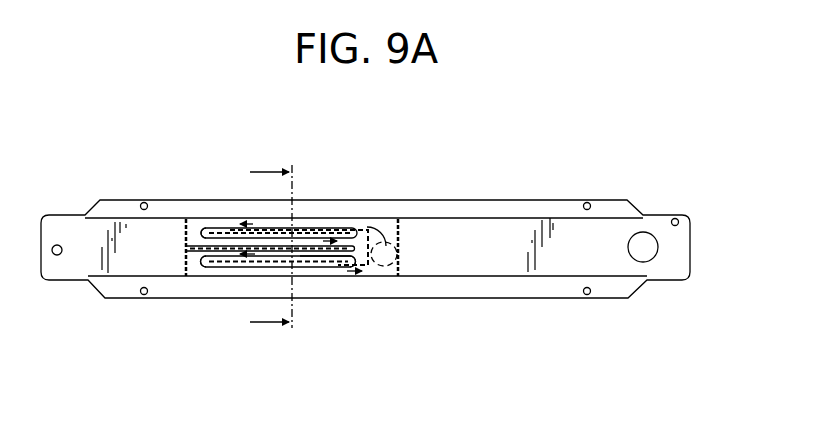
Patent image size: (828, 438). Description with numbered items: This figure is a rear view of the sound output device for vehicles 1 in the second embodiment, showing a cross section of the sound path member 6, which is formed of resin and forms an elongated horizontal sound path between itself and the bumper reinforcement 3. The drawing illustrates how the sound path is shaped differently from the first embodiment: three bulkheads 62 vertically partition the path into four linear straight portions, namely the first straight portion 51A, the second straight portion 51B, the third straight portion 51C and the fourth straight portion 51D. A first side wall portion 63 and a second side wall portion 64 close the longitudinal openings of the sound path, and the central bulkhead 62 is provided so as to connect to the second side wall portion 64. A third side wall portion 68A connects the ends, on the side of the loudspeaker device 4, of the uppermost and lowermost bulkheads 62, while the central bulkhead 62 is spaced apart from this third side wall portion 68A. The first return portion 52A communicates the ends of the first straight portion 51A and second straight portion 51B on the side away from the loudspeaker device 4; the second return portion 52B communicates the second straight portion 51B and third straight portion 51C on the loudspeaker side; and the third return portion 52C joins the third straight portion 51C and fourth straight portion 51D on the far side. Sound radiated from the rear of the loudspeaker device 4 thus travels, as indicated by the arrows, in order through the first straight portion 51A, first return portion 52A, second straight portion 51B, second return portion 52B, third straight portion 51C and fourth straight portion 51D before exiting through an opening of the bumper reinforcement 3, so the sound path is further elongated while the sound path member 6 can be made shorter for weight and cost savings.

The sound output device for vehicles 1 is at (679, 156).
The bumper reinforcement 3 is at (630, 202).
The loudspeaker device 4 is at (402, 263).
The sound path member 6 is at (404, 236).
The first straight portion 51A is at (338, 227).
The second straight portion 51B is at (314, 260).
The third straight portion 51C is at (263, 252).
The fourth straight portion 51D is at (224, 268).
The first return portion 52A is at (194, 233).
The second return portion 52B is at (361, 268).
The third return portion 52C is at (198, 262).
The bulkhead 62 is at (232, 233).
The first side wall portion 63 is at (400, 254).
The second side wall portion 64 is at (189, 230).
The third side wall portion 68A is at (360, 231).